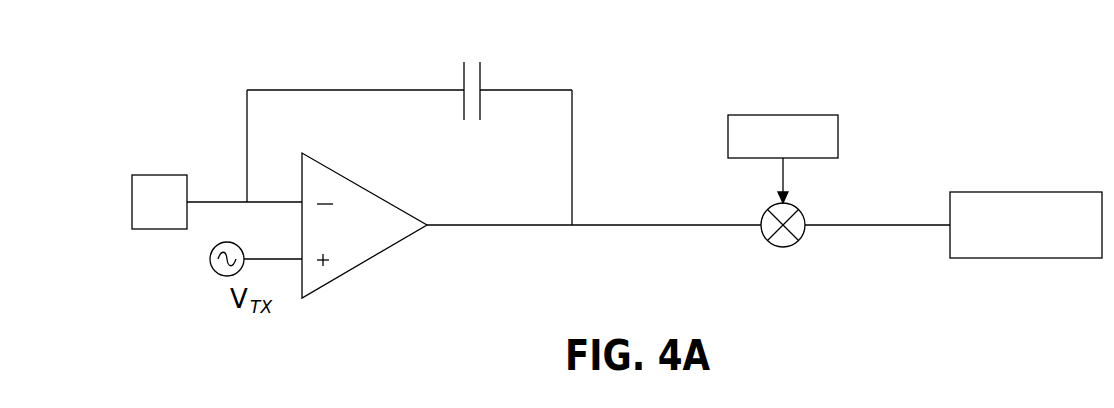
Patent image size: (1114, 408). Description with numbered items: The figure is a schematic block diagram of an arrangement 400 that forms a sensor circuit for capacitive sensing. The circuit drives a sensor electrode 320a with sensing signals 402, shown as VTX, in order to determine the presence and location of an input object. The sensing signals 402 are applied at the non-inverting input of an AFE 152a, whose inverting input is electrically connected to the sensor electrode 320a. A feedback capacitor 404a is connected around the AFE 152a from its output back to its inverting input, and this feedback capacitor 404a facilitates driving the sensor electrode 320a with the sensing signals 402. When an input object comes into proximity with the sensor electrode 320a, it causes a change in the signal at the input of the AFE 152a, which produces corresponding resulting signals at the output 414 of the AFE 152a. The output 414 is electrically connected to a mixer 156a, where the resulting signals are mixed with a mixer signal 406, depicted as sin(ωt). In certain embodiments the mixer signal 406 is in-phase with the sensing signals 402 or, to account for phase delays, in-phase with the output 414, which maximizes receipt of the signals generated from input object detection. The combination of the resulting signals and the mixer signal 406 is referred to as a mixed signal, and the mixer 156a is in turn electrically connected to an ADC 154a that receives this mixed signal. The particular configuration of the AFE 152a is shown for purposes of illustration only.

The arrangement 400 is at (898, 117).
The sensor electrode 320a is at (132, 195).
The feedback capacitor 404a is at (480, 73).
The AFE 152a is at (390, 239).
The sensing signals 402 is at (210, 262).
The output 414 is at (450, 222).
The mixer signal 406 is at (728, 132).
The mixer 156a is at (798, 243).
The ADC 154a is at (1055, 237).